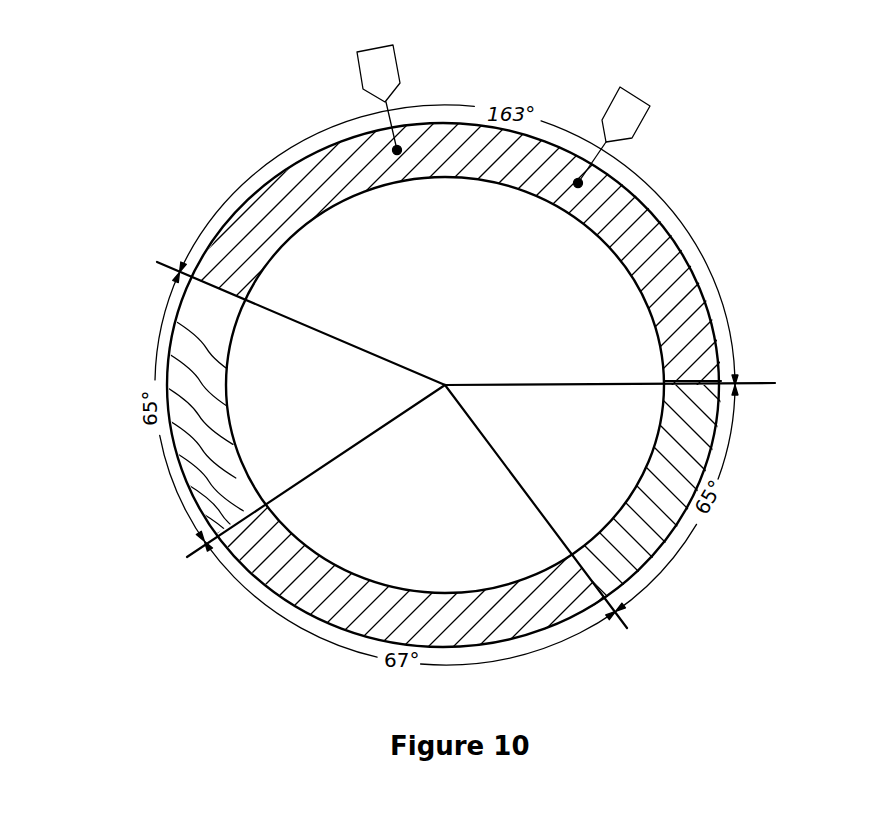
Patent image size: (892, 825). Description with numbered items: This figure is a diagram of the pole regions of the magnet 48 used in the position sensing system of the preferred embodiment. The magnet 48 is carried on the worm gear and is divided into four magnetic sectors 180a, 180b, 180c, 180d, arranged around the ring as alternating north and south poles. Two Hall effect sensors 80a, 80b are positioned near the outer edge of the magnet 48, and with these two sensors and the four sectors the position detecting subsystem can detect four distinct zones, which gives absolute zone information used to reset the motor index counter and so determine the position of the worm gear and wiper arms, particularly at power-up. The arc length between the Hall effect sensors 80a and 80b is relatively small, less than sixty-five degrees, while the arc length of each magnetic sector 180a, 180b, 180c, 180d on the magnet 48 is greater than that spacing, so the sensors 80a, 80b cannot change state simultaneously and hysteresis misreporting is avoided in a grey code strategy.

The magnet 48 is at (660, 214).
The magnetic sector 180a is at (262, 215).
The magnetic sector 180b is at (692, 413).
The magnetic sector 180c is at (537, 603).
The magnetic sector 180d is at (200, 461).
The Hall effect sensor 80a is at (379, 47).
The Hall effect sensor 80b is at (650, 107).